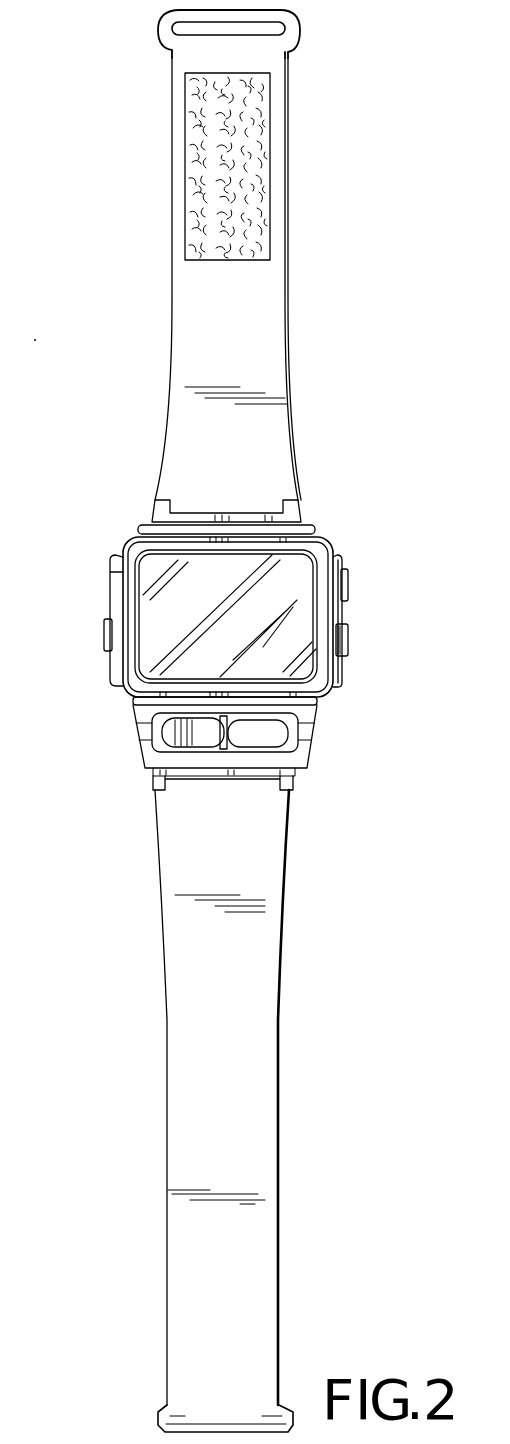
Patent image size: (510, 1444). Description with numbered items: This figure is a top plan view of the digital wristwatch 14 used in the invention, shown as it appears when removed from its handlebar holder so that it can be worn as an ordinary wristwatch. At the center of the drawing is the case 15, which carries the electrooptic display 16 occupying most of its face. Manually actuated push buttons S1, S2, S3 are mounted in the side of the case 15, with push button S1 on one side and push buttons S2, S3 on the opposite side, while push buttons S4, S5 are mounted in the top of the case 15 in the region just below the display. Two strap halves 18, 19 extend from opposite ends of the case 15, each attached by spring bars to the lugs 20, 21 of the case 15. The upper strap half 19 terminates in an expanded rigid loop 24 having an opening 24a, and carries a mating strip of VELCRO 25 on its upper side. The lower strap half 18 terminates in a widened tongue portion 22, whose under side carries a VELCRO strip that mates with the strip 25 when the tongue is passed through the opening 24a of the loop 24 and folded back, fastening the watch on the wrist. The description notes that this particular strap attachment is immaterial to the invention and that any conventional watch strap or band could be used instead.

The digital wristwatch 14 is at (86, 495).
The case 15 is at (135, 549).
The electrooptic display 16 is at (248, 636).
The strap half 18 is at (180, 1010).
The strap half 19 is at (185, 330).
The lug 20 is at (292, 787).
The lug 21 is at (164, 510).
The widened tongue portion 22 is at (165, 1414).
The expanded rigid loop 24 is at (170, 42).
The opening 24a is at (176, 27).
The mating strip of VELCRO 25 is at (192, 155).
The push button S1 is at (104, 640).
The push button S2 is at (348, 648).
The push button S3 is at (348, 583).
The push button S4 is at (203, 733).
The push button S5 is at (293, 752).